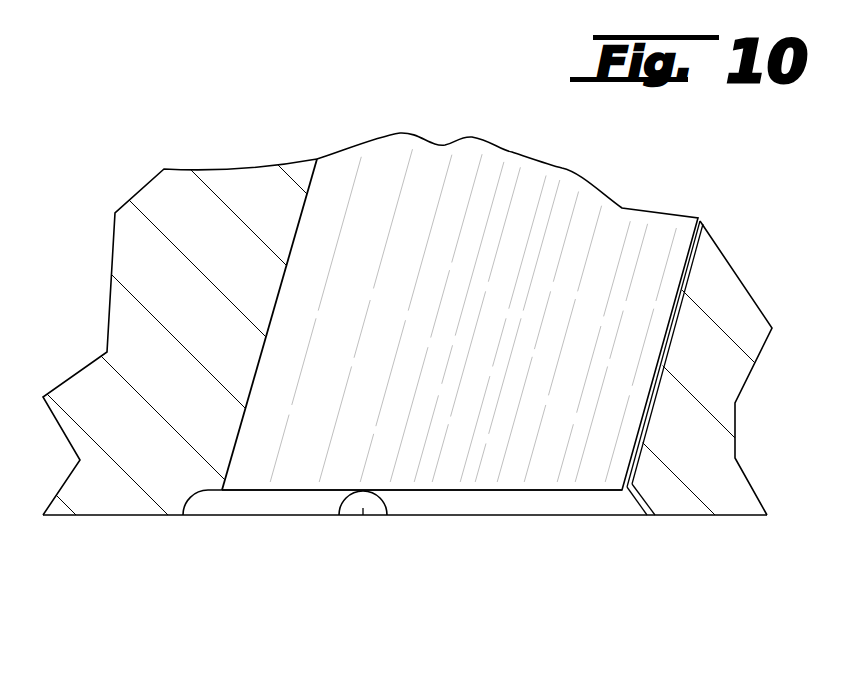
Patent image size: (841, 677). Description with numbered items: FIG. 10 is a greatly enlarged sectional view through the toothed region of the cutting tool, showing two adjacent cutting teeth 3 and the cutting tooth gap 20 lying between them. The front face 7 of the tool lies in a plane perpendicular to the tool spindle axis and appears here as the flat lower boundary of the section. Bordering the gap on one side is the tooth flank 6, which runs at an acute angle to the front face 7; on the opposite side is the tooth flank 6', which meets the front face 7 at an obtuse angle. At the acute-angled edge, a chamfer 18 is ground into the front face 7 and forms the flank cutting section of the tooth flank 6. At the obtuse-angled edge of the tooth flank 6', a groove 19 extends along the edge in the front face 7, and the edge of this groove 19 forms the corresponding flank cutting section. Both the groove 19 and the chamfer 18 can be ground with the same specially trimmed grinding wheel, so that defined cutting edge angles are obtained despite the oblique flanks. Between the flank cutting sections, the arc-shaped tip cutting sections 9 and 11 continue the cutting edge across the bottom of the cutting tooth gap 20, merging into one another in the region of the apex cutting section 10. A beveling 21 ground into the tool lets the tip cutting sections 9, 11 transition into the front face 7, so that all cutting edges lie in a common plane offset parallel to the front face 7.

The cutting tooth 3 is at (230, 187).
The cutting tooth gap 20 is at (500, 277).
The tooth flank 6 is at (707, 429).
The tooth flank 6' is at (274, 398).
The front face 7 is at (113, 515).
The groove 19 is at (195, 497).
The tip cutting section 9 is at (257, 490).
The apex cutting section 10 is at (405, 491).
The beveling 21 is at (482, 503).
The tip cutting section 11 is at (593, 492).
The chamfer 18 is at (637, 502).